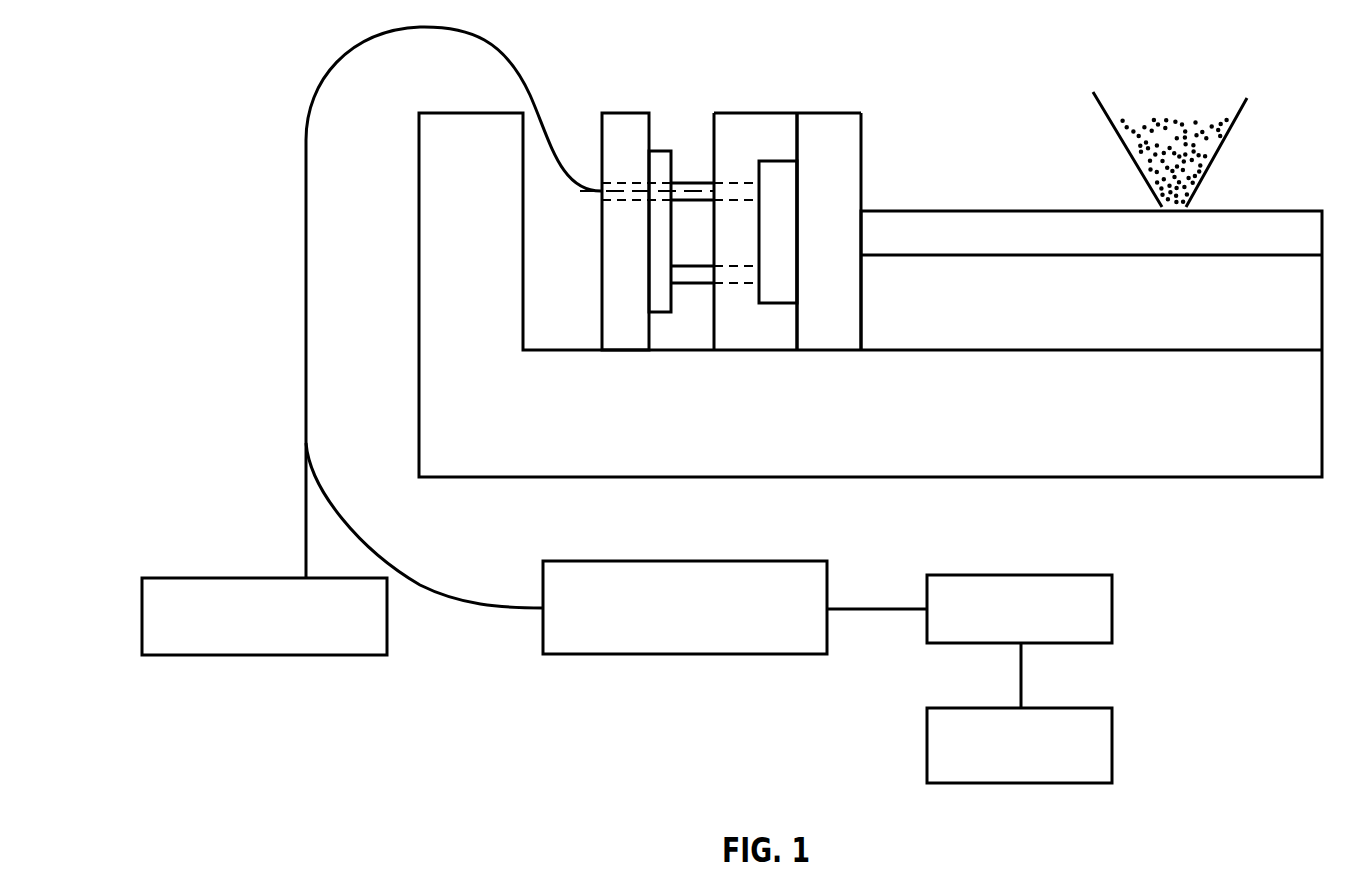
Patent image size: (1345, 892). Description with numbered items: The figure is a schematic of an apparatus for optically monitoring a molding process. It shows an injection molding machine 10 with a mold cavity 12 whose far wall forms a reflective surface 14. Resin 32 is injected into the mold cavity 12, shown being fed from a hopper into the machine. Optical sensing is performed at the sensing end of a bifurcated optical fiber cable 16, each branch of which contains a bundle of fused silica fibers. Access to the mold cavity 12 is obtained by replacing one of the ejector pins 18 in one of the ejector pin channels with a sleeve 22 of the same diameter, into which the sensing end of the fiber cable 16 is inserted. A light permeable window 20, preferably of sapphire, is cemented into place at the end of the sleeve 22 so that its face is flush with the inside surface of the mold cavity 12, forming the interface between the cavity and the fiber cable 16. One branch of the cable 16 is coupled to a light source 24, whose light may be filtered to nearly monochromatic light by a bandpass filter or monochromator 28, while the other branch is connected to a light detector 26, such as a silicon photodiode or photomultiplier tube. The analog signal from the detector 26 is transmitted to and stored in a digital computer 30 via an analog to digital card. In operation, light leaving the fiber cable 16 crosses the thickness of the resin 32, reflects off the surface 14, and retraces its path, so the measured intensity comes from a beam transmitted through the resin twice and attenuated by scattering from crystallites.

The injection molding machine 10 is at (896, 197).
The mold cavity 12 is at (783, 177).
The reflective surface 14 is at (797, 215).
The bifurcated optical fiber cable 16 is at (306, 342).
The ejector pin 18 is at (679, 273).
The light permeable window 20 is at (750, 200).
The sleeve 22 is at (701, 181).
The light source 24 is at (216, 578).
The light detector 26 is at (1068, 532).
The monochromator 28 is at (741, 561).
The digital computer 30 is at (927, 741).
The resin 32 is at (1172, 129).